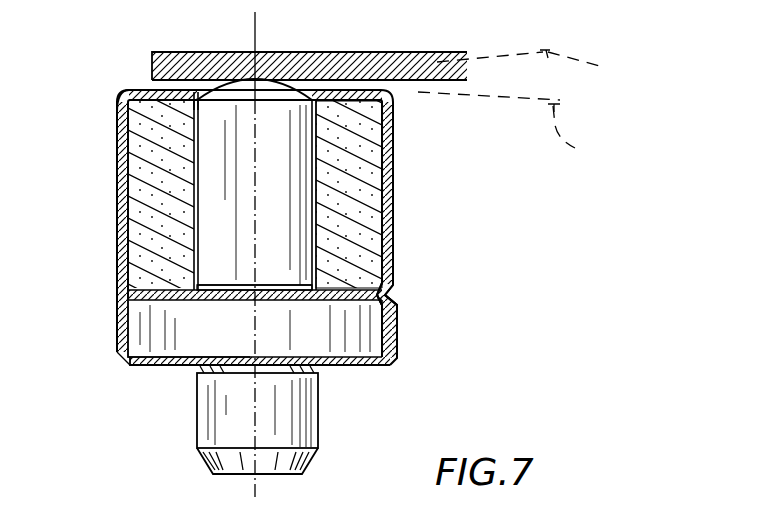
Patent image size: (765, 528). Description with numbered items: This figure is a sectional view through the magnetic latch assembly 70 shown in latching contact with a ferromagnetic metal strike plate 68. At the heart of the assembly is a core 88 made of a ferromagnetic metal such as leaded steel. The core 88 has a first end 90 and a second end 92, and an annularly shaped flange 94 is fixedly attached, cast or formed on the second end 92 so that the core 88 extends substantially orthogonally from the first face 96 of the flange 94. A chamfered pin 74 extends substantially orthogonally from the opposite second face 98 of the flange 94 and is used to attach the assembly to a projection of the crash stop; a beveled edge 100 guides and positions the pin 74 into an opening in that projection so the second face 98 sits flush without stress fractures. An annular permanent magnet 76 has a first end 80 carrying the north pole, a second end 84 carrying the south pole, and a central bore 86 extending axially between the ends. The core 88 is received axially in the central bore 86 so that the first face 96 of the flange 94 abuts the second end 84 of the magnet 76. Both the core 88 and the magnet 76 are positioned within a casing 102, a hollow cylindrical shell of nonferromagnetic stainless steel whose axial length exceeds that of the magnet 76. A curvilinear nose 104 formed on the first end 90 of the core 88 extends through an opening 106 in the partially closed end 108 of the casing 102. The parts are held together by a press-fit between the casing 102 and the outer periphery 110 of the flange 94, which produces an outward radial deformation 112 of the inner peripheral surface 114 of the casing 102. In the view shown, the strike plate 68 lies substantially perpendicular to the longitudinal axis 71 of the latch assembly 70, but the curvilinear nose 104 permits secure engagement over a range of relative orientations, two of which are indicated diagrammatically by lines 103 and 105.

The strike plate 68 is at (383, 82).
The magnetic latch assembly 70 is at (108, 235).
The longitudinal axis 71 is at (258, 500).
The chamfered pin 74 is at (297, 423).
The permanent magnet 76 is at (140, 132).
The first end 80 is at (352, 100).
The second end 84 is at (318, 300).
The central bore 86 is at (345, 125).
The core 88 is at (222, 148).
The first end 90 is at (197, 92).
The second end 92 is at (258, 290).
The annularly shaped flange 94 is at (358, 343).
The first face 96 is at (175, 298).
The second face 98 is at (344, 365).
The beveled edge 100 is at (305, 460).
The casing 102 is at (395, 218).
The line 103 is at (542, 62).
The nose 104 is at (225, 85).
The line 105 is at (520, 127).
The opening 106 is at (192, 82).
The partially closed end 108 is at (146, 92).
The outer periphery 110 is at (378, 358).
The outward radial deformation 112 is at (395, 300).
The inner peripheral surface 114 is at (363, 330).